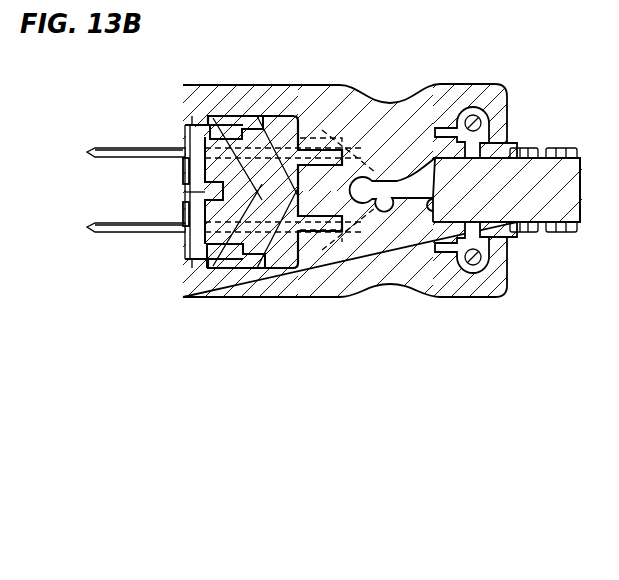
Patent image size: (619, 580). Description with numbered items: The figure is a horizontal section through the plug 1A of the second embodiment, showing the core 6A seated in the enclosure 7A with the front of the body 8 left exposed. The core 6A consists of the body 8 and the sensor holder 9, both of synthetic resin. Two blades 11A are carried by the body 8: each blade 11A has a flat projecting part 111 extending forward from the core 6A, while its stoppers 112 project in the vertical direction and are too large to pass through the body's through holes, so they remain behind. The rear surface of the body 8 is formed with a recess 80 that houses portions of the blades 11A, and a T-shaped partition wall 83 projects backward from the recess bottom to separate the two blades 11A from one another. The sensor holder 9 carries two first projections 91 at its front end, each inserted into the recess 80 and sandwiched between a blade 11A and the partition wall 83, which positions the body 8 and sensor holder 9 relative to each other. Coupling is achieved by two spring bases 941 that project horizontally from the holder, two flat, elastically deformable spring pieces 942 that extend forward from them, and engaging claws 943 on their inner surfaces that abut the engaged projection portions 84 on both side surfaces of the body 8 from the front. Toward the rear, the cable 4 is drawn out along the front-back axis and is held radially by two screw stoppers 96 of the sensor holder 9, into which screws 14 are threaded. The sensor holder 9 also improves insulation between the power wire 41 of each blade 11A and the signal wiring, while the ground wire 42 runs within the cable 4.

The plug 1A is at (410, 278).
The cable 4 is at (538, 200).
The core 6A is at (330, 135).
The enclosure 7A is at (368, 282).
The body 8 is at (190, 262).
The sensor holder 9 is at (368, 130).
The blade 11A is at (108, 230).
The screw 14 is at (482, 267).
The power wire 41 is at (300, 262).
The ground wire 42 is at (402, 178).
The recess 80 is at (208, 132).
The partition wall 83 is at (185, 192).
The engaged projection portion 84 is at (240, 262).
The first projection 91 is at (183, 208).
The screw stopper 96 is at (469, 267).
The projecting part 111 is at (148, 230).
The stopper 112 is at (213, 262).
The spring base 941 is at (297, 270).
The spring piece 942 is at (263, 270).
The engaging claw 943 is at (190, 270).